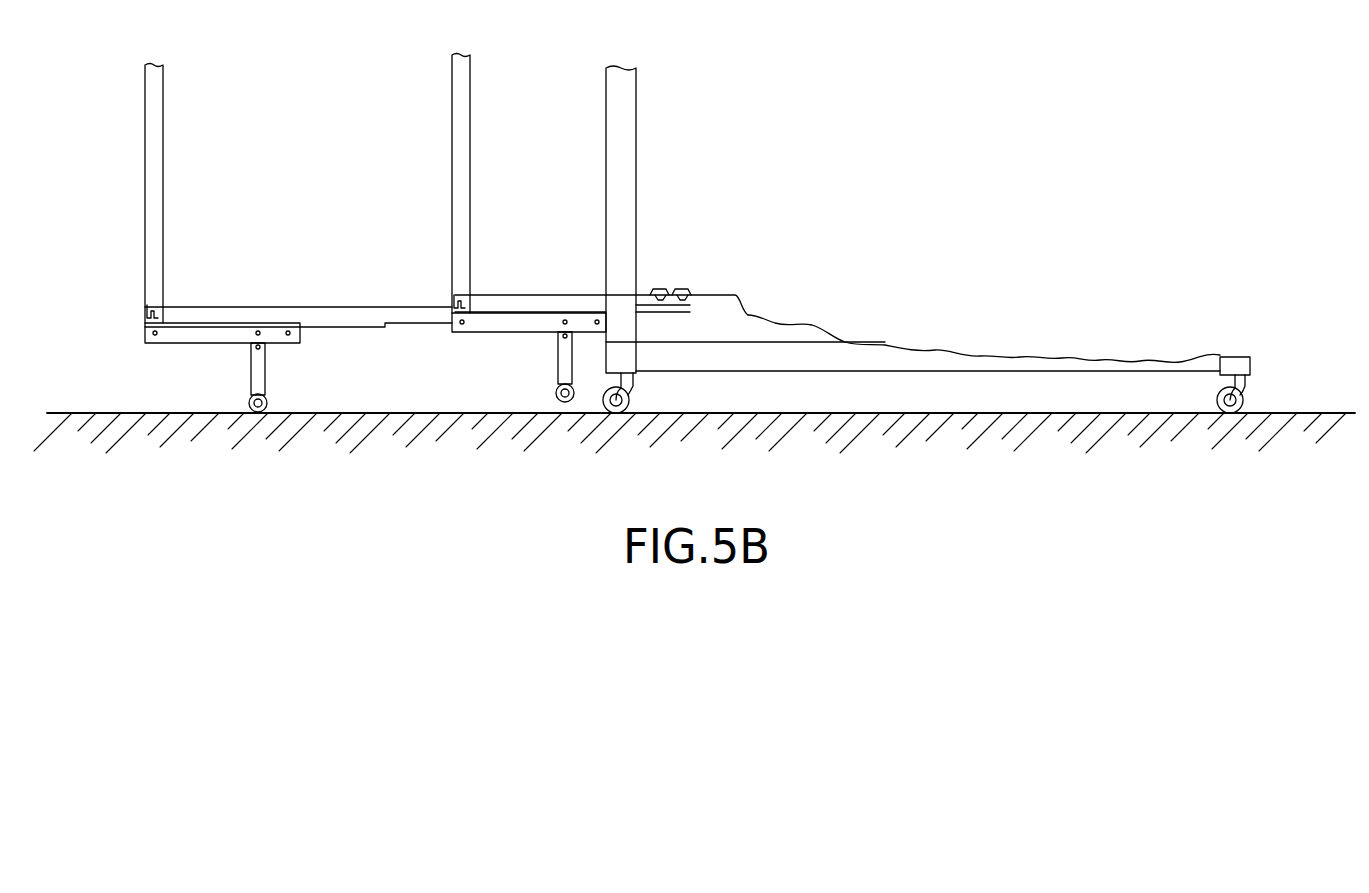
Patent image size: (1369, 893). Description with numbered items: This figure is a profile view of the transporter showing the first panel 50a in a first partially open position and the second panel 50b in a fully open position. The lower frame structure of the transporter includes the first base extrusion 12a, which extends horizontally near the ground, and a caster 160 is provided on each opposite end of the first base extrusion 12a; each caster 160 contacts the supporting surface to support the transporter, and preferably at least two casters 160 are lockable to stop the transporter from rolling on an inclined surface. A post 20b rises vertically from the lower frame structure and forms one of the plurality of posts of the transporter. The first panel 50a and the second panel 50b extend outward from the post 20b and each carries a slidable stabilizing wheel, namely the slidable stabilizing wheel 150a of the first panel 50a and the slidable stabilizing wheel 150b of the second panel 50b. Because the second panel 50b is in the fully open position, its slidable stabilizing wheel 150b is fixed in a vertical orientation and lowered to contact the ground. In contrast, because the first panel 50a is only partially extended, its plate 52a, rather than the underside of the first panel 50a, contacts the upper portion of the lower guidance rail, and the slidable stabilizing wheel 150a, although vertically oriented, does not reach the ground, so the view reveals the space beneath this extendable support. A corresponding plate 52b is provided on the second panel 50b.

The second panel 50b is at (155, 167).
The first panel 50a is at (462, 157).
The post 20b is at (626, 177).
The plate 52b is at (362, 328).
The plate 52a is at (683, 315).
The slidable stabilizing wheel 150b is at (250, 403).
The slidable stabilizing wheel 150a is at (555, 391).
The caster 160 is at (633, 404).
The first base extrusion 12a is at (832, 357).